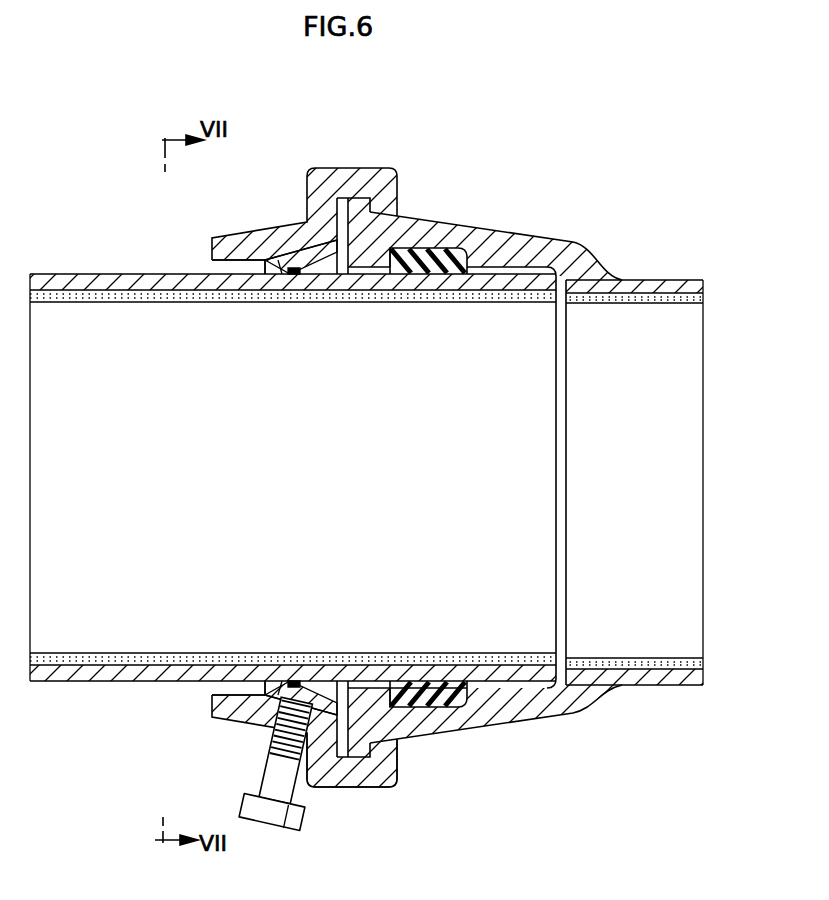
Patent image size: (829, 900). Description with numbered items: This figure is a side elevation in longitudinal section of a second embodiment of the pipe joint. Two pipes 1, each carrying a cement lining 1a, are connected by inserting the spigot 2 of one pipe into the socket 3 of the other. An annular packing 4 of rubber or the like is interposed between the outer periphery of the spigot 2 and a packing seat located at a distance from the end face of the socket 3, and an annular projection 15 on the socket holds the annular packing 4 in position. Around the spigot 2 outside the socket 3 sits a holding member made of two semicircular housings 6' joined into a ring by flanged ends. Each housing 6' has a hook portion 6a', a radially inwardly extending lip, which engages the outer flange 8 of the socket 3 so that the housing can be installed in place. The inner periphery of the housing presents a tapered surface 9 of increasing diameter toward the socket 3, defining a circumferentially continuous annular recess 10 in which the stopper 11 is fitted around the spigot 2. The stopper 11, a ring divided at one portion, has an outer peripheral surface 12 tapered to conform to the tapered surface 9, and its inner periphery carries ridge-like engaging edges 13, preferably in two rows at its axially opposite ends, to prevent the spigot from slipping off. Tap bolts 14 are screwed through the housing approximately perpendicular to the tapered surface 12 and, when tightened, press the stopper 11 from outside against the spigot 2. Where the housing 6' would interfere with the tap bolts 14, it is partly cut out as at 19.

The pipes 1 is at (80, 282).
The cement lining 1a is at (486, 296).
The spigot 2 is at (517, 277).
The socket 3 is at (540, 228).
The annular packing 4 is at (412, 272).
The semicircular housings 6' is at (304, 454).
The hook portion 6a' is at (393, 439).
The outer flange 8 is at (357, 216).
The tapered surface 9 is at (292, 273).
The annular recess 10 is at (268, 272).
The stopper 11 is at (293, 275).
The outer peripheral surface 12 is at (297, 220).
The engaging edges 13 is at (316, 276).
The tap bolts 14 is at (297, 814).
The annular projection 15 is at (414, 250).
The cut-out 19 is at (310, 788).